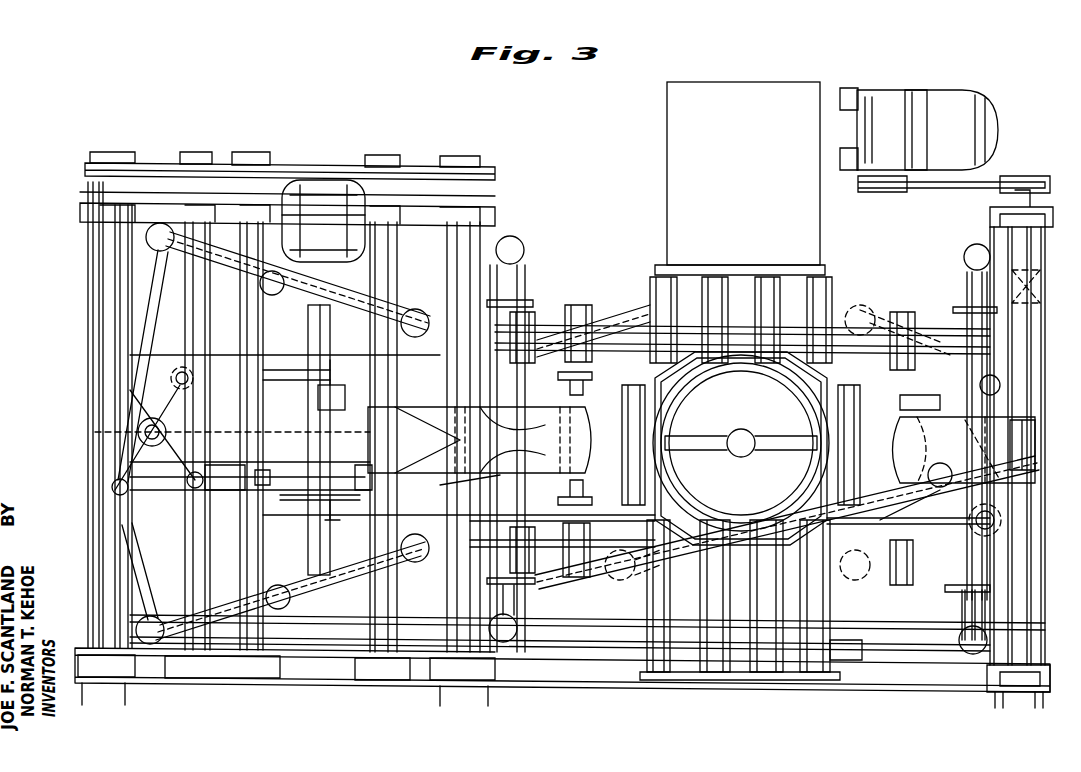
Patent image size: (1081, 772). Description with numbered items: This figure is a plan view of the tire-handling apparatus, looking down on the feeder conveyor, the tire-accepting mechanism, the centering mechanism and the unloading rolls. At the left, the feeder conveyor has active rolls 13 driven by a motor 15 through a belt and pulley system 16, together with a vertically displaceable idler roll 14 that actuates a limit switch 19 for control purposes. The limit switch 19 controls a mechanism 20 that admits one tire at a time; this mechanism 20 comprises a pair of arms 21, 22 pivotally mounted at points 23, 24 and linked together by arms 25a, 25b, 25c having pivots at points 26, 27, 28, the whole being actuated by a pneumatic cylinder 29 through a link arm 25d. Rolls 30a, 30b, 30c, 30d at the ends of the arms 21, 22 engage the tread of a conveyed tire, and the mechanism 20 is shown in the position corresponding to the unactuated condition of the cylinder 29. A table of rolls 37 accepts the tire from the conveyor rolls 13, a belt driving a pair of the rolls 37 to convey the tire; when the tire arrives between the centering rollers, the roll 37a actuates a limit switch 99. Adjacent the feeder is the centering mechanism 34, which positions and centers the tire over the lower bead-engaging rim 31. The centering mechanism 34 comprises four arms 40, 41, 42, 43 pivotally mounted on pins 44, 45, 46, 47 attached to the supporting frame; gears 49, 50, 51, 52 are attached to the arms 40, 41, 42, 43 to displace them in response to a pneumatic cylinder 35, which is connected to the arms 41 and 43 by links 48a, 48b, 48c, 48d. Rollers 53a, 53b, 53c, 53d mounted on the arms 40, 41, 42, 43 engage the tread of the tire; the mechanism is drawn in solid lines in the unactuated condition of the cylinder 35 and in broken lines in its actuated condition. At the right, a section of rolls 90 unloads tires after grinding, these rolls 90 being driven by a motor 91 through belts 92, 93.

The active rolls 13 is at (205, 265).
The vertically displaceable idler roll 14 is at (330, 520).
The motor 15 is at (315, 190).
The belt and pulley system 16 is at (160, 165).
The limit switch 19 is at (332, 410).
The mechanism 20 is at (60, 385).
The arm 21 is at (330, 360).
The arm 22 is at (348, 575).
The pivot point 23 is at (270, 295).
The pivot point 24 is at (272, 585).
The link arm 25a is at (152, 298).
The link arm 25b is at (176, 390).
The link arm 25c is at (140, 514).
The link arm 25d is at (170, 468).
The pivot point 26 is at (178, 374).
The pivot point 27 is at (100, 432).
The pivot point 28 is at (128, 490).
The pneumatic cylinder 29 is at (295, 500).
The roll 30a is at (420, 318).
The roll 30b is at (160, 225).
The roll 30c is at (418, 556).
The roll 30d is at (152, 645).
The lower bead-engaging rim 31 is at (810, 413).
The centering mechanism 34 is at (554, 268).
The pneumatic cylinder 35 is at (1040, 308).
The table rolls 37 is at (565, 318).
The roll 37a is at (765, 668).
The arm 40 is at (520, 290).
The arm 41 is at (515, 600).
The arm 42 is at (970, 285).
The arm 43 is at (972, 608).
The pin 44 is at (488, 407).
The pin 45 is at (494, 472).
The pin 46 is at (995, 380).
The pin 47 is at (995, 523).
The link 48a is at (978, 452).
The link 48b is at (930, 580).
The link 48c is at (618, 578).
The link 48d is at (535, 580).
The gear 49 is at (560, 394).
The gear 50 is at (560, 486).
The gear 51 is at (930, 402).
The gear 52 is at (905, 515).
The centering roller 53a is at (512, 238).
The centering roller 53b is at (505, 645).
The centering roller 53c is at (975, 244).
The centering roller 53d is at (972, 655).
The unloading rolls 90 is at (915, 320).
The motor 91 is at (987, 102).
The belt 92 is at (1000, 178).
The belt 93 is at (1030, 425).
The limit switch 99 is at (845, 645).